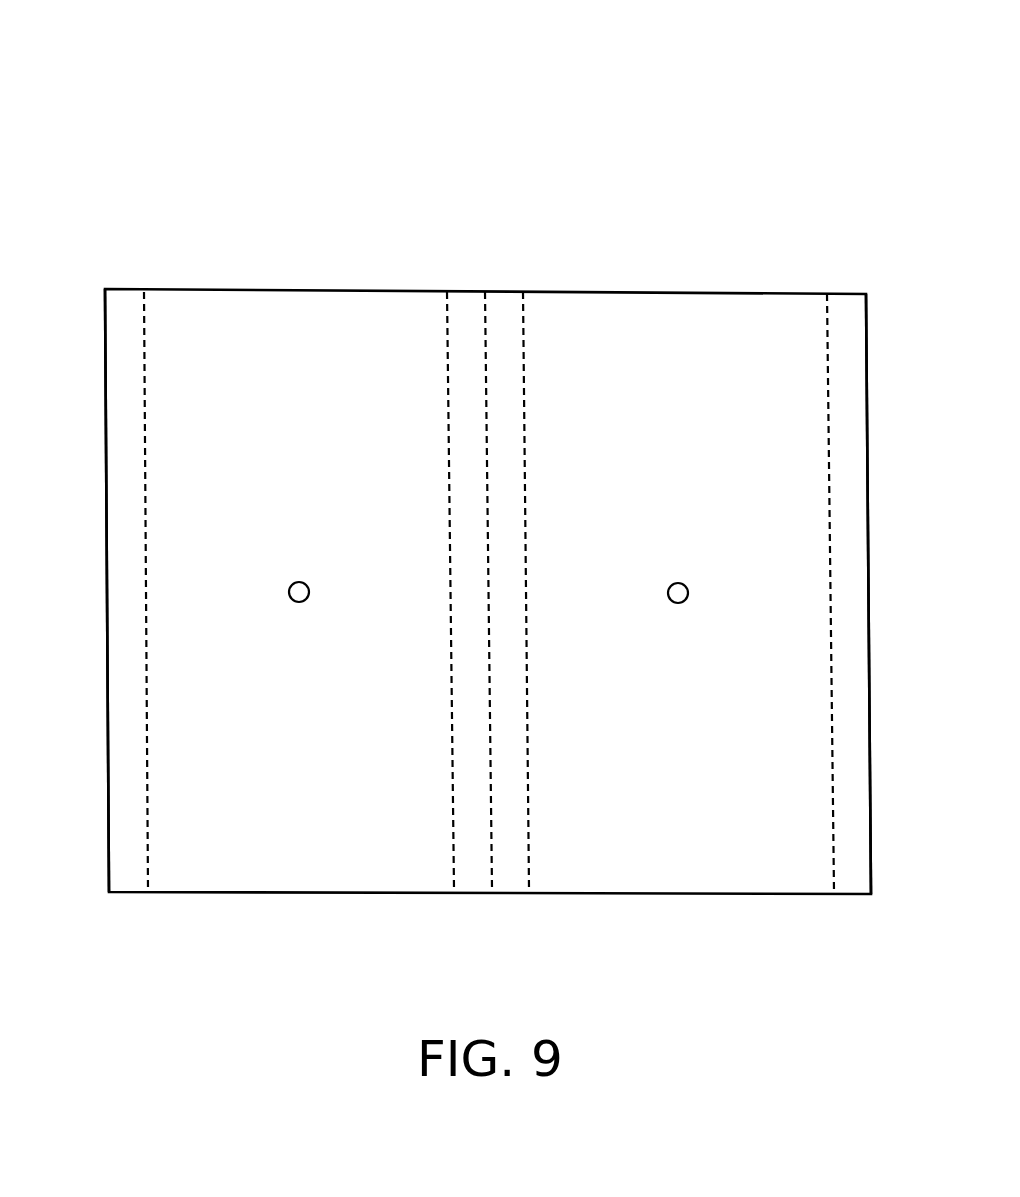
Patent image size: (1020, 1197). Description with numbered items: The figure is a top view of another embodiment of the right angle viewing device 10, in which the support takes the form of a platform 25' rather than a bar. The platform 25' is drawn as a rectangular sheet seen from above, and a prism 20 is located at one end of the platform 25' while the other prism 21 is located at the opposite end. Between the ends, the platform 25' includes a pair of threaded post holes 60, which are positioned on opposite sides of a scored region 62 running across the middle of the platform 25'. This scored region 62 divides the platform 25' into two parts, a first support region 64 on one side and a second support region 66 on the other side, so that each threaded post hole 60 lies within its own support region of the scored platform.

The right angle viewing device 10 is at (333, 58).
The prism 20 is at (127, 575).
The prism 21 is at (847, 582).
The platform 25' is at (495, 647).
The threaded post holes 60 is at (299, 602).
The scored region 62 is at (485, 265).
The first support region 64 is at (296, 333).
The second support region 66 is at (682, 333).